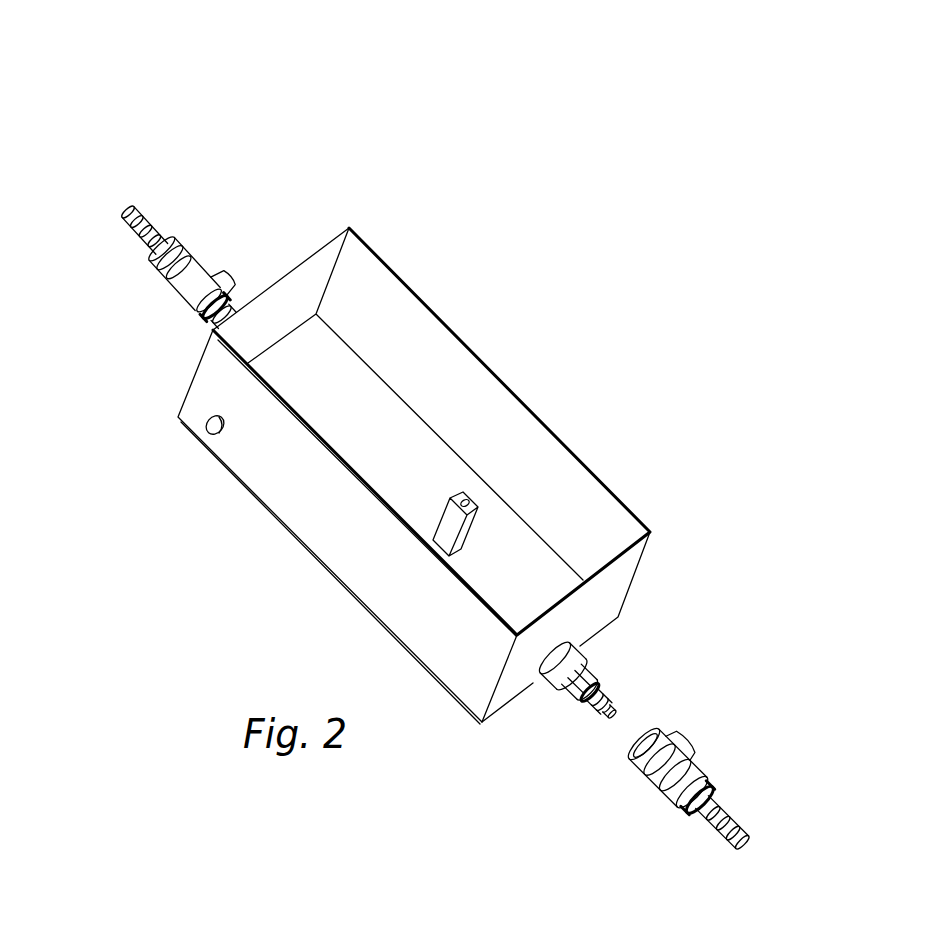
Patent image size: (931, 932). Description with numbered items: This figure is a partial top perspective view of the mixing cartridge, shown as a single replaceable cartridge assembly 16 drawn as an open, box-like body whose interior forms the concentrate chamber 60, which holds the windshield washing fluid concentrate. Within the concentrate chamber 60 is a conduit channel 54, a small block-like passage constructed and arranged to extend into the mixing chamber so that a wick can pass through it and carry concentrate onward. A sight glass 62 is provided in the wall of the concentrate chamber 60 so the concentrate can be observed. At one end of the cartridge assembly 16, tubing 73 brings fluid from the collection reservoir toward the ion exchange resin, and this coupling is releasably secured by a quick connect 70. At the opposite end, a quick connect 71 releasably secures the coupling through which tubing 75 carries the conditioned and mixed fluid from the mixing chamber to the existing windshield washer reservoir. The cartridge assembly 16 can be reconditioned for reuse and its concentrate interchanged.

The cartridge assembly 16 is at (440, 163).
The conduit channel 54 is at (452, 533).
The concentrate chamber 60 is at (395, 432).
The sight glass 62 is at (212, 433).
The quick connect 70 is at (145, 276).
The quick connect 71 is at (733, 746).
The tubing 73 is at (127, 217).
The tubing 75 is at (748, 835).